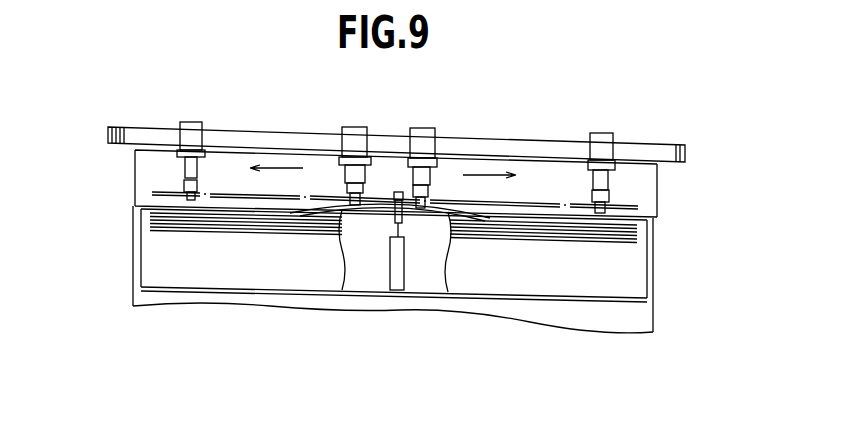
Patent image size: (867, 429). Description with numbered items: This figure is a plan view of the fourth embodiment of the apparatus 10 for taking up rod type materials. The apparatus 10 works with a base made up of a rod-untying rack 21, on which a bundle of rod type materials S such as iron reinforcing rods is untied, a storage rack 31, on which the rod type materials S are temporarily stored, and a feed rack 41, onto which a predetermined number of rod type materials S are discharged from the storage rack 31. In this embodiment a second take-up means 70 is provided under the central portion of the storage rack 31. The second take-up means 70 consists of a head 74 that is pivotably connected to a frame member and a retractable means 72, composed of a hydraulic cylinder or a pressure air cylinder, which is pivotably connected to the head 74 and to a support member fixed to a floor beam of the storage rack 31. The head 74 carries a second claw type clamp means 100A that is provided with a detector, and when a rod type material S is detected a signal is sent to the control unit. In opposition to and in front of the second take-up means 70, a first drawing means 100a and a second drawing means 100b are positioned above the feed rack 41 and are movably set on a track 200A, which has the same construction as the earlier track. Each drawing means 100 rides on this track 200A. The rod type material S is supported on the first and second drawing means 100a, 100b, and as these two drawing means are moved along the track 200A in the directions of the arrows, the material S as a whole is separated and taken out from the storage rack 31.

The apparatus for taking up rod type materials 10 is at (545, 130).
The rod-untying rack 21 is at (597, 314).
The storage rack 31 is at (232, 272).
The feed rack 41 is at (135, 198).
The second take-up means 70 is at (382, 282).
The retractable means 72 is at (405, 268).
The head 74 is at (397, 213).
The suction actuator 100 is at (612, 173).
The second claw type clamp means 100A is at (397, 192).
The first drawing means 100a is at (430, 187).
The second drawing means 100b is at (183, 170).
The track 200A is at (642, 142).
The rod type material S is at (455, 208).